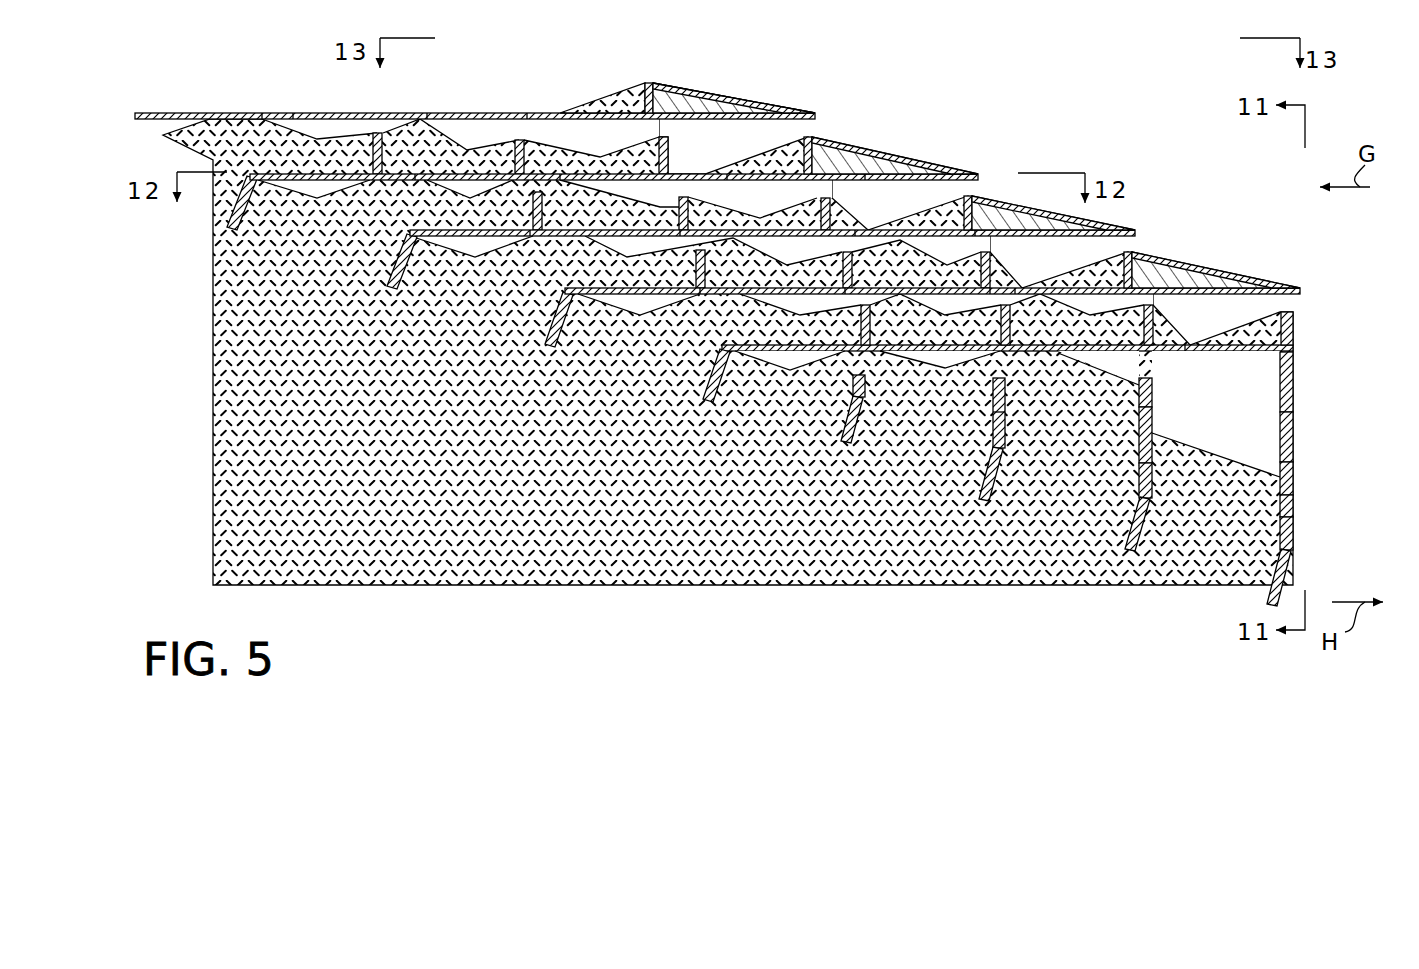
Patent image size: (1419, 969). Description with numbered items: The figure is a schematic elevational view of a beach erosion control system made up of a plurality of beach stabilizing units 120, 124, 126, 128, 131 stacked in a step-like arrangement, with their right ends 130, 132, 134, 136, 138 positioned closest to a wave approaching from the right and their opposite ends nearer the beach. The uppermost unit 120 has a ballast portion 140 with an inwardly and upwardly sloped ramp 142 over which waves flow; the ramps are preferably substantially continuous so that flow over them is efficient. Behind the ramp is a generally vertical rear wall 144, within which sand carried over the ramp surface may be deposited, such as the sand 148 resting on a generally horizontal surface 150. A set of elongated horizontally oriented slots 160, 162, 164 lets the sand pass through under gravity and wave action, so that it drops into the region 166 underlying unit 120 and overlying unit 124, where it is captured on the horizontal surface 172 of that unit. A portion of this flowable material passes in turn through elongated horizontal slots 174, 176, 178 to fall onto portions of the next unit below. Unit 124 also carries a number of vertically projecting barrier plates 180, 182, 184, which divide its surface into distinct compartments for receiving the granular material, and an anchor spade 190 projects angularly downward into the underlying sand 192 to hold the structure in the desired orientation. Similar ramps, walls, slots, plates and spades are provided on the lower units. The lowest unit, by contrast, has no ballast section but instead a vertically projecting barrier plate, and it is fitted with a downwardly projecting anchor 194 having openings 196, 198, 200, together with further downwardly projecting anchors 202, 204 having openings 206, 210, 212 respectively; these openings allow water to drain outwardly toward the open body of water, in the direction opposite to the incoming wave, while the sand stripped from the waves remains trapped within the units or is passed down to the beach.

The beach stabilizing unit 120 is at (683, 80).
The beach stabilizing unit 124 is at (935, 160).
The beach stabilizing unit 126 is at (1108, 218).
The beach stabilizing unit 128 is at (1260, 275).
The right end of beach stabilizing unit 130 is at (817, 119).
The beach stabilizing unit 131 is at (1302, 325).
The right end of beach stabilizing unit 132 is at (977, 178).
The right end of beach stabilizing unit 134 is at (1140, 235).
The right end of beach stabilizing unit 136 is at (1300, 293).
The right end of beach stabilizing unit 138 is at (1293, 367).
The ballast portion 140 is at (723, 100).
The inwardly and upwardly sloped ramp 142 is at (733, 90).
The generally vertical rear wall 144 is at (667, 83).
The deposited sand 148 is at (617, 95).
The generally horizontal surface 150 is at (557, 112).
The elongated horizontally oriented slot 160 is at (519, 133).
The elongated horizontally oriented slot 162 is at (405, 112).
The elongated horizontally oriented slot 164 is at (278, 113).
The region underlying unit 120 166 is at (460, 138).
The horizontal surface 172 is at (677, 175).
The elongated horizontal slot 174 is at (680, 188).
The elongated horizontal slot 176 is at (557, 147).
The elongated horizontal slot 178 is at (413, 155).
The vertically projecting barrier plate 180 is at (670, 147).
The vertically projecting barrier plate 182 is at (513, 112).
The vertically projecting barrier plate 184 is at (372, 155).
The anchor spade 190 is at (232, 222).
The underlying sand 192 is at (390, 425).
The downwardly projecting anchor 194 is at (1293, 495).
The opening 196 is at (1293, 413).
The opening 198 is at (1293, 463).
The opening 200 is at (1293, 520).
The downwardly projecting anchor 202 is at (1125, 547).
The downwardly projecting anchor 204 is at (983, 488).
The opening 206 is at (1153, 407).
The opening 210 is at (1152, 462).
The opening 212 is at (1000, 412).